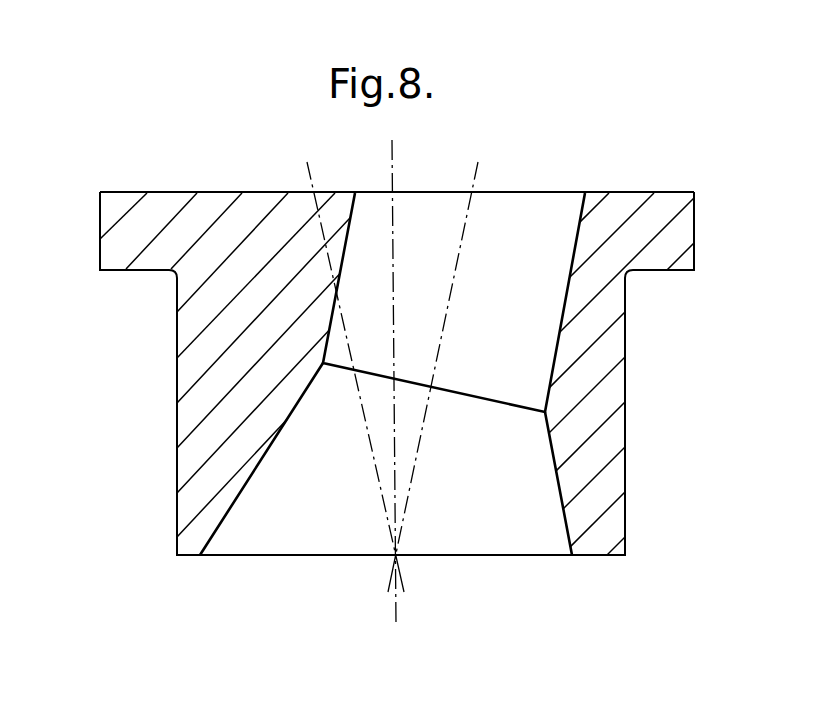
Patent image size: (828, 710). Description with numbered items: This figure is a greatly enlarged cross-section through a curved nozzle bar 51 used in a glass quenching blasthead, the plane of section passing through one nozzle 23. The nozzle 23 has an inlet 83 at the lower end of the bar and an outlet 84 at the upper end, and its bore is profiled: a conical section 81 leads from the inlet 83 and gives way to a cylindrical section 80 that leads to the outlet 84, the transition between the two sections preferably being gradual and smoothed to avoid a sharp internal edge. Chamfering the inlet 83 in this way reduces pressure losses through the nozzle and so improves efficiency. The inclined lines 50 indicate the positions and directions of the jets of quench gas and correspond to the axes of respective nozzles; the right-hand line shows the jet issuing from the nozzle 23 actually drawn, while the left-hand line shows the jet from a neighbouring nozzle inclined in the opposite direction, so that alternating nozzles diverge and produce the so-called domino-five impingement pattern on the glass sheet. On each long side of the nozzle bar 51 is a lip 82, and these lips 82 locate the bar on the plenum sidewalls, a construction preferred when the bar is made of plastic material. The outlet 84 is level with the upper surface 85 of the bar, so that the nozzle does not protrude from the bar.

The nozzle 23 is at (495, 218).
The lines indicating jets of quench gas 50 is at (479, 181).
The nozzle bar 51 is at (185, 379).
The cylindrical section 80 is at (502, 311).
The conical section 81 is at (463, 481).
The lips 82 is at (117, 244).
The inlet 83 is at (442, 557).
The outlet 84 is at (492, 192).
The upper surface of the bar 85 is at (215, 192).